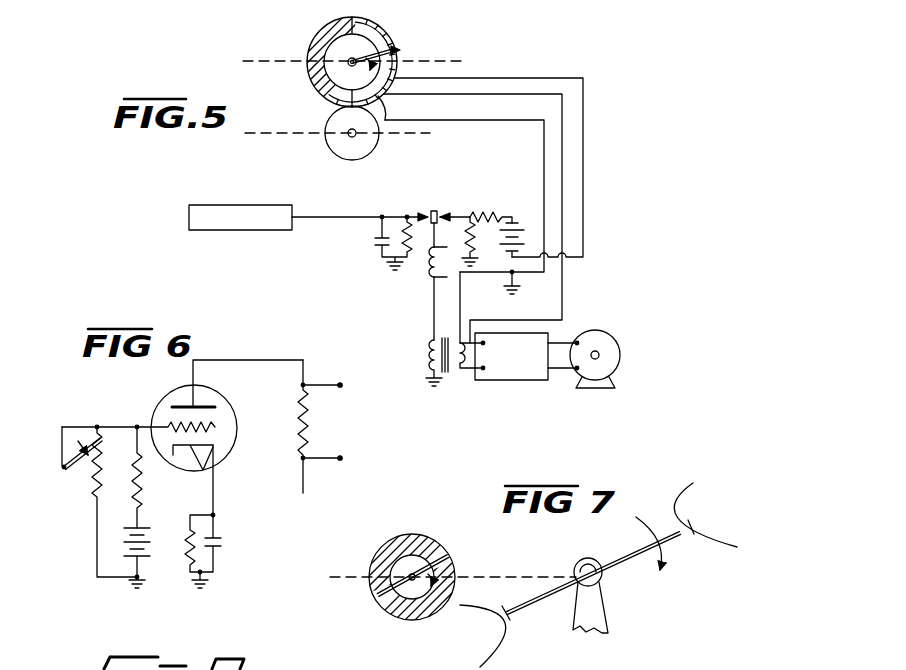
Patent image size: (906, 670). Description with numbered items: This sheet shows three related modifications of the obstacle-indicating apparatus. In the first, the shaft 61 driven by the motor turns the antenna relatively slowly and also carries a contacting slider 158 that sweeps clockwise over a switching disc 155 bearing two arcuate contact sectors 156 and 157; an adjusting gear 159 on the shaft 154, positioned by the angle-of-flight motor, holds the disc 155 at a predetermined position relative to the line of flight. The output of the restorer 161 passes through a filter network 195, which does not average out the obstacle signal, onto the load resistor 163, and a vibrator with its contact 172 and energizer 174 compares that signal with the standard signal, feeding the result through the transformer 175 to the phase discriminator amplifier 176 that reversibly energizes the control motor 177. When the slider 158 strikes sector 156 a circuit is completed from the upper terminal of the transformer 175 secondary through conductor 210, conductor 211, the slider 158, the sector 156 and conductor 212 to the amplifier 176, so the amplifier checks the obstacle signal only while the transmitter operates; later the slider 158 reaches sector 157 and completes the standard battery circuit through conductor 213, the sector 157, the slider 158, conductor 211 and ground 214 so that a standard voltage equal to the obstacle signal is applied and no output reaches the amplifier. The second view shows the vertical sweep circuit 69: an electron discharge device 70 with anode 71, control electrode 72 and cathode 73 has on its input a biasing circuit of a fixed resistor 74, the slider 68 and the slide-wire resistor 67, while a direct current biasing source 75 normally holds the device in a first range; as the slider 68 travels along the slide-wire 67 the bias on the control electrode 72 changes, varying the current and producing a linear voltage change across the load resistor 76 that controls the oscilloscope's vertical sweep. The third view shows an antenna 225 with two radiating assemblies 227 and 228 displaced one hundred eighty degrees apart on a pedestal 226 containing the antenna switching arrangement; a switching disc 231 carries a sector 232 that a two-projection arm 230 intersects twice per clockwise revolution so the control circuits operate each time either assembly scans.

In FIG. 5, the shaft 61 is at (271, 60).
In FIG. 7, the shaft 61 is at (353, 579).
In FIG. 5, the shaft 154 is at (262, 136).
In FIG. 5, the switching disc 155 is at (329, 30).
In FIG. 5, the arcuate contact sector 156 is at (384, 31).
In FIG. 5, the arcuate contact sector 157 is at (381, 94).
In FIG. 5, the contacting slider 158 is at (398, 50).
In FIG. 5, the adjusting gear 159 is at (341, 154).
In FIG. 5, the restorer 161 is at (213, 205).
In FIG. 5, the load resistor 163 is at (384, 212).
In FIG. 5, the contact 172 is at (424, 214).
In FIG. 5, the energizer 174 is at (428, 274).
In FIG. 5, the transformer 175 is at (450, 374).
In FIG. 5, the amplifier 176 is at (526, 380).
In FIG. 5, the control motor 177 is at (617, 351).
In FIG. 5, the filter network 195 is at (357, 229).
In FIG. 5, the conductor 210 is at (463, 306).
In FIG. 5, the conductor 211 is at (478, 122).
In FIG. 5, the conductor 212 is at (489, 95).
In FIG. 5, the conductor 213 is at (583, 222).
In FIG. 5, the ground 214 is at (516, 281).
In FIG. 6, the vertical sweep circuit 69 is at (140, 409).
In FIG. 6, the anode 71 is at (206, 402).
In FIG. 6, the control electrode 72 is at (222, 420).
In FIG. 6, the electron discharge device 70 is at (224, 456).
In FIG. 6, the cathode 73 is at (207, 470).
In FIG. 6, the slider 68 is at (68, 470).
In FIG. 6, the slide-wire resistor 67 is at (92, 486).
In FIG. 6, the fixed resistor 74 is at (144, 492).
In FIG. 6, the direct current biasing source 75 is at (147, 566).
In FIG. 6, the load resistor 76 is at (311, 429).
In FIG. 7, the switching disc 231 is at (428, 536).
In FIG. 7, the arm 230 is at (449, 558).
In FIG. 7, the switching sector 232 is at (538, 572).
In FIG. 7, the antenna 225 is at (612, 578).
In FIG. 7, the pedestal 226 is at (576, 628).
In FIG. 7, the radiating assembly 227 is at (496, 615).
In FIG. 7, the radiating assembly 228 is at (697, 528).